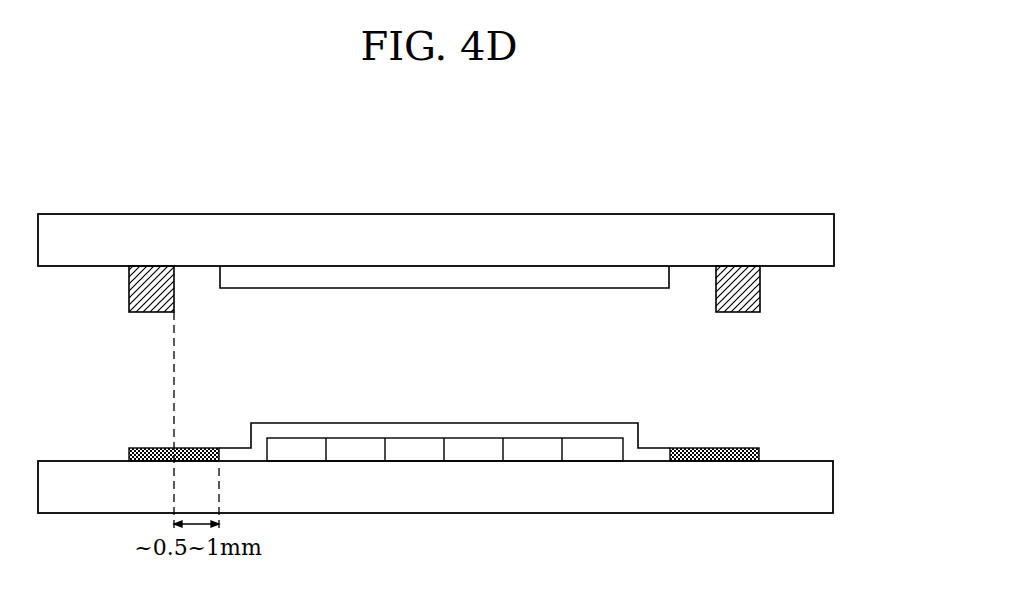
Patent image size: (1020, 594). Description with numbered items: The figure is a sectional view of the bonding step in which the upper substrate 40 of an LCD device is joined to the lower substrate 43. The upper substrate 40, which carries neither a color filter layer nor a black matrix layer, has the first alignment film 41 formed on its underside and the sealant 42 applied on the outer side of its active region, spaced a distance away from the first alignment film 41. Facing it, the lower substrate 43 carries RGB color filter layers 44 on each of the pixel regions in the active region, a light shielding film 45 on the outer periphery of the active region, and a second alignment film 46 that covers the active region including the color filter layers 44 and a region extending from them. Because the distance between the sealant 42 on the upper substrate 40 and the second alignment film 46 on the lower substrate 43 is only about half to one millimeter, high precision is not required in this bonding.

The upper substrate 40 is at (827, 242).
The first alignment film 41 is at (645, 288).
The sealant 42 is at (148, 312).
The lower substrate 43 is at (826, 484).
The RGB color filter layers 44 is at (376, 446).
The light shielding film 45 is at (744, 448).
The second alignment film 46 is at (487, 436).